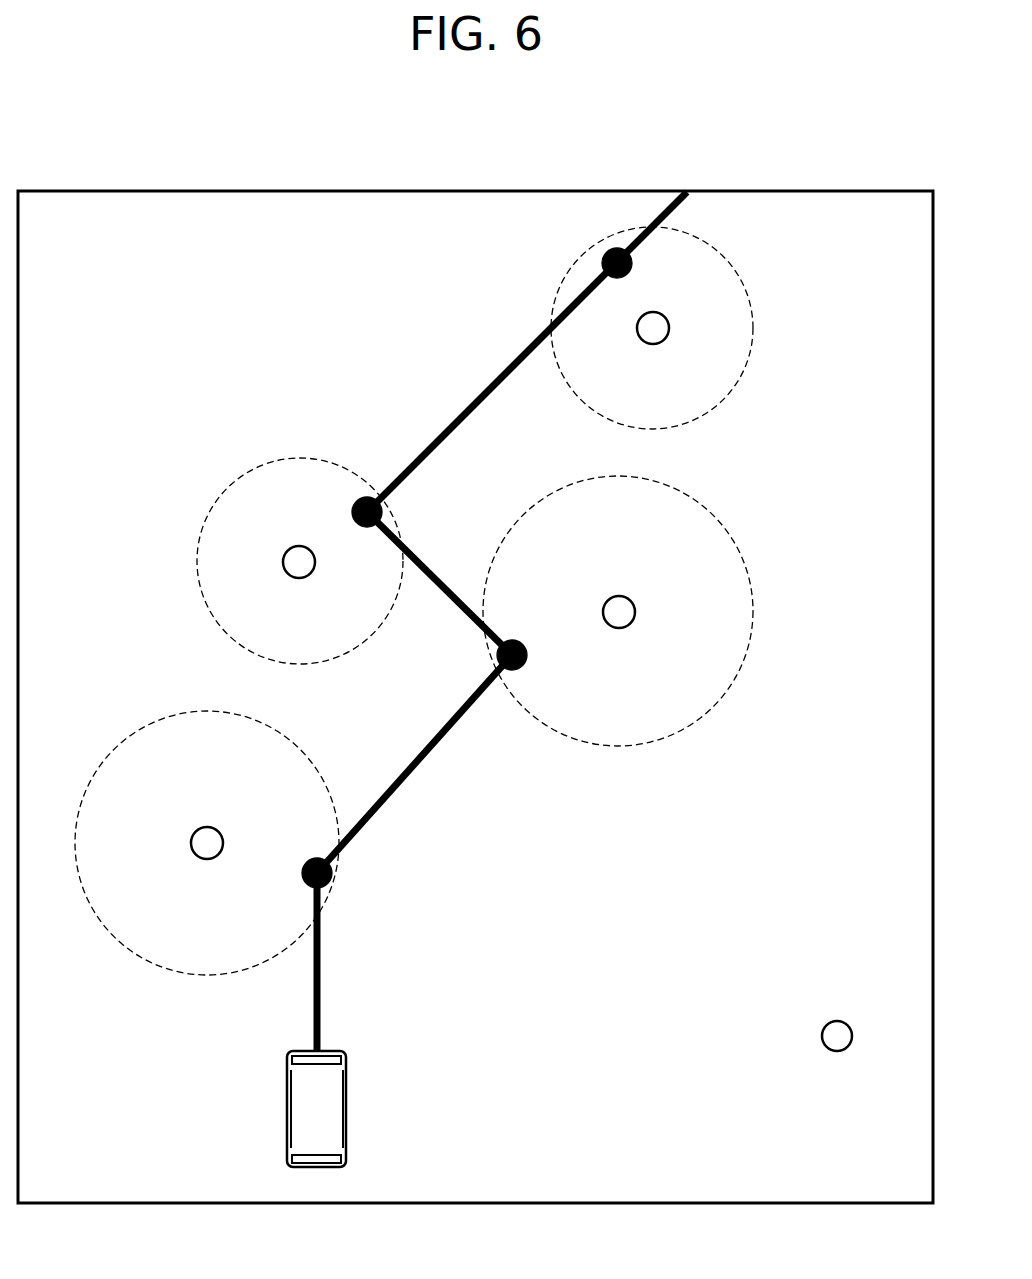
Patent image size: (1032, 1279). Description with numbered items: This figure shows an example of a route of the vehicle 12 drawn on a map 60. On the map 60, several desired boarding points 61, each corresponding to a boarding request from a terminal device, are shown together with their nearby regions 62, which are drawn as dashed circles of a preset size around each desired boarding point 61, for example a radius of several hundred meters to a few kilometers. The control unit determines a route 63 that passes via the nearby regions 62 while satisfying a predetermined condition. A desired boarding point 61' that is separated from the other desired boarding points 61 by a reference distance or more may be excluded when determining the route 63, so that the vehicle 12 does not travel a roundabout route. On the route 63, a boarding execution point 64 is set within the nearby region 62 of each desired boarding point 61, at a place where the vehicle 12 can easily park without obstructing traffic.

The map 60 is at (121, 217).
The vehicle 12 is at (323, 1122).
The desired boarding point 61 is at (427, 622).
The desired boarding point 61' is at (858, 1002).
The nearby region 62 is at (753, 318).
The route 63 is at (486, 392).
The boarding execution point 64 is at (632, 262).